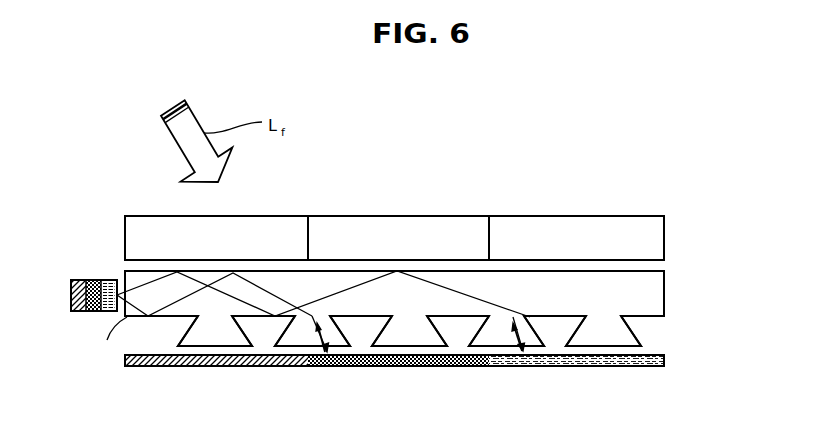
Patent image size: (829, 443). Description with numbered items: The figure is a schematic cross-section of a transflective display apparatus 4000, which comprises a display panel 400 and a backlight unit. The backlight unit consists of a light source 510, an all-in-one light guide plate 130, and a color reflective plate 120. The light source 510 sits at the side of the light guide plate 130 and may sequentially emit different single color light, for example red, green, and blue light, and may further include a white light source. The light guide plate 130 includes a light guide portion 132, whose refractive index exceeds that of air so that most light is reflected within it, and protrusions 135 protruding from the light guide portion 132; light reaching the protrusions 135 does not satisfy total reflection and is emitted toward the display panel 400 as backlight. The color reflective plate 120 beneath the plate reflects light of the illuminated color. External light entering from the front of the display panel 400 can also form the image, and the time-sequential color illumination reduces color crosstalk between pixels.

The transflective display apparatus 4000 is at (626, 167).
The display panel 400 is at (664, 237).
The all-in-one light guide plate 130 is at (447, 308).
The light guide portion 132 is at (657, 290).
The protrusions 135 is at (450, 331).
The color reflective plate 120 is at (665, 358).
The light source 510 is at (90, 280).